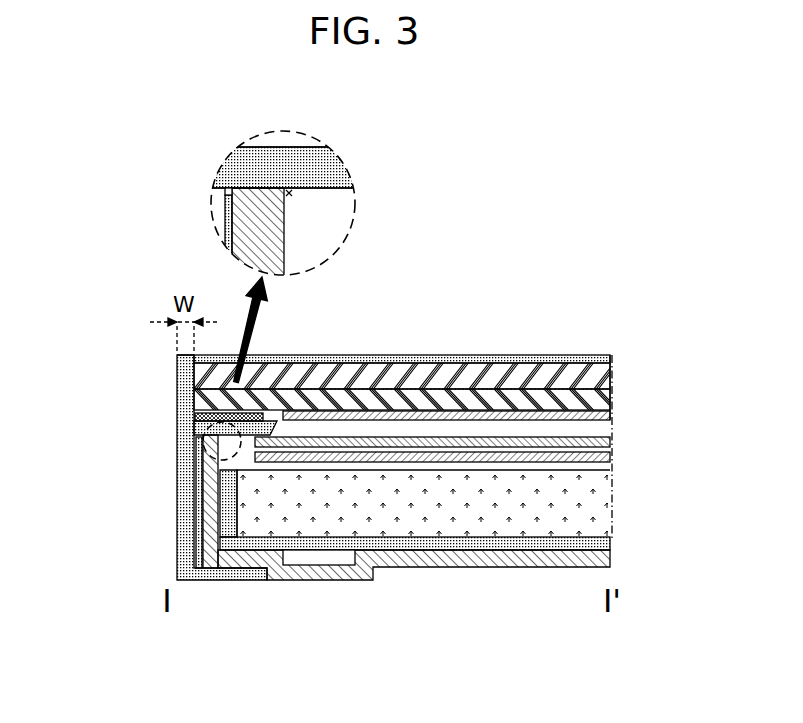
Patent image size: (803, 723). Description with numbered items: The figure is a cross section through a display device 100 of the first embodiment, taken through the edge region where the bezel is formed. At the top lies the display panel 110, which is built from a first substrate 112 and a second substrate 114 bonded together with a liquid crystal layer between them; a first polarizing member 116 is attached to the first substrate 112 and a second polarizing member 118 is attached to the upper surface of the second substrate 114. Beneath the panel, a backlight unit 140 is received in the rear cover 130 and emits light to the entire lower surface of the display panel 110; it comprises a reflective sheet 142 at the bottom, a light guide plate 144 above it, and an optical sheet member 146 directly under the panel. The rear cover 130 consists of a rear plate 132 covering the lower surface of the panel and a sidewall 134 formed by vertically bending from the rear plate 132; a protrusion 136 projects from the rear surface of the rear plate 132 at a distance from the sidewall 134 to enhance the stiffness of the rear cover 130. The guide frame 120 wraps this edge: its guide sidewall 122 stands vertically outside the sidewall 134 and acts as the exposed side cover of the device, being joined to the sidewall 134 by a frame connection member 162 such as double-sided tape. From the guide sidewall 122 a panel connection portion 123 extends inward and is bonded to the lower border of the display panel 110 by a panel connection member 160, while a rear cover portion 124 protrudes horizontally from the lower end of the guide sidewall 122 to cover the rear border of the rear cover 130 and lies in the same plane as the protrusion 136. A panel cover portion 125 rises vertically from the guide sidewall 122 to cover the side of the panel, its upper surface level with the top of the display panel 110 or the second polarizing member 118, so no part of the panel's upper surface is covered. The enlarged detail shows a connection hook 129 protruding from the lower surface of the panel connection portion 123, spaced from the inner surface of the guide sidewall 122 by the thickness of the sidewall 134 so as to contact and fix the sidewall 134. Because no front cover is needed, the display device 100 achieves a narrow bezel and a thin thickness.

The display device 100 is at (627, 189).
The display panel 110 is at (473, 296).
The first substrate 112 is at (558, 400).
The second substrate 114 is at (513, 378).
The first polarizing member 116 is at (594, 417).
The second polarizing member 118 is at (472, 356).
The guide frame 120 is at (82, 383).
The guide sidewall 122 is at (185, 497).
The panel connection portion 123 is at (212, 439).
The rear cover portion 124 is at (215, 545).
The panel cover portion 125 is at (186, 391).
The connection hook 129 is at (292, 196).
The rear cover 130 is at (408, 638).
The rear plate 132 is at (407, 567).
The sidewall 134 is at (216, 510).
The protrusion 136 is at (322, 565).
The backlight unit 140 is at (703, 460).
The reflective sheet 142 is at (600, 540).
The light guide plate 144 is at (600, 495).
The optical sheet member 146 is at (630, 460).
The panel connection member 160 is at (270, 418).
The frame connection member 162 is at (200, 560).